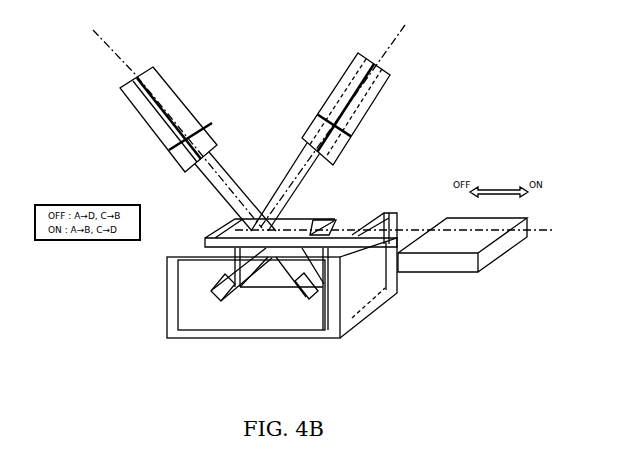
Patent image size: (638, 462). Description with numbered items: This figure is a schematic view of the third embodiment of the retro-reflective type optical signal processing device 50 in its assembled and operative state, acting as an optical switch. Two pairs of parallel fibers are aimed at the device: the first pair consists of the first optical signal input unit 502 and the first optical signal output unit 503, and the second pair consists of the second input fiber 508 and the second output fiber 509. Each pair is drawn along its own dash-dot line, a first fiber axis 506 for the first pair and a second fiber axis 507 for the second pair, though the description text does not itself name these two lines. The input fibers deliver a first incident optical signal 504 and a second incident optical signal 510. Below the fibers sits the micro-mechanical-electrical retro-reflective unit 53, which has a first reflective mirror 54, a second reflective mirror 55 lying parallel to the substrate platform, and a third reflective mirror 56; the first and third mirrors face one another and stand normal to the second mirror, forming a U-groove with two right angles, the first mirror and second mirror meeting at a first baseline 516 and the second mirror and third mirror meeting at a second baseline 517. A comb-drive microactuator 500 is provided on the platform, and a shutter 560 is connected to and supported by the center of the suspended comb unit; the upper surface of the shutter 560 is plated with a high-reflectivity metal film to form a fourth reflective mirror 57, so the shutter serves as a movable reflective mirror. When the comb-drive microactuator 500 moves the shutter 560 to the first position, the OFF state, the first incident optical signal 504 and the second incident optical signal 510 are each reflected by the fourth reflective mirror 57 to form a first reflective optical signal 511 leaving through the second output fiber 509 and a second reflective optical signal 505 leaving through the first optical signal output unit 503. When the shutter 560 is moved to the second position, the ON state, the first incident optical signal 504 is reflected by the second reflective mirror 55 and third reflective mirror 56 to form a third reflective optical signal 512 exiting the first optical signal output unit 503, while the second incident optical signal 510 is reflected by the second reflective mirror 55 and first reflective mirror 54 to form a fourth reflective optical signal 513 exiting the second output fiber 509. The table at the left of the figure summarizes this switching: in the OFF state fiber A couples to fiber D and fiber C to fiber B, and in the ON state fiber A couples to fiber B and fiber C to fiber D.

The retro-reflective type optical signal processing device 50 is at (262, 77).
The micro-mechanical-electrical retro-reflective unit 53 is at (188, 362).
The first reflective mirror 54 is at (197, 310).
The second reflective mirror 55 is at (253, 318).
The third reflective mirror 56 is at (323, 305).
The fourth reflective mirror 57 is at (340, 210).
The comb-drive microactuator 500 is at (568, 214).
The first optical signal input unit 502 is at (148, 130).
The first optical signal output unit 503 is at (190, 105).
The first incident optical signal 504 is at (215, 193).
The second reflective optical signal 505 is at (230, 163).
The first optical axis 506 is at (108, 47).
The second optical axis 507 is at (393, 45).
The second input fiber 508 is at (382, 96).
The second output fiber 509 is at (343, 82).
The second incident optical signal 510 is at (302, 208).
The first reflective optical signal 511 is at (292, 170).
The third reflective optical signal 512 is at (293, 292).
The fourth reflective optical signal 513 is at (235, 282).
The first baseline 516 is at (192, 318).
The second baseline 517 is at (362, 302).
The shutter 560 is at (207, 247).